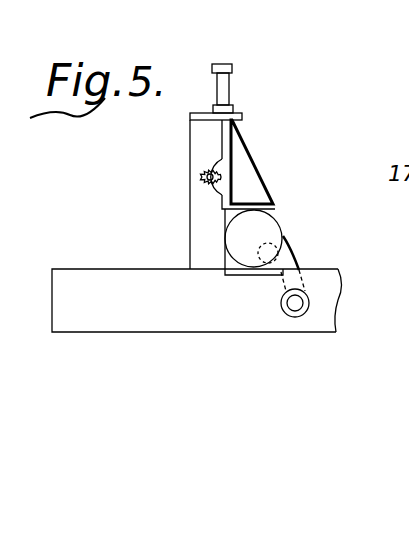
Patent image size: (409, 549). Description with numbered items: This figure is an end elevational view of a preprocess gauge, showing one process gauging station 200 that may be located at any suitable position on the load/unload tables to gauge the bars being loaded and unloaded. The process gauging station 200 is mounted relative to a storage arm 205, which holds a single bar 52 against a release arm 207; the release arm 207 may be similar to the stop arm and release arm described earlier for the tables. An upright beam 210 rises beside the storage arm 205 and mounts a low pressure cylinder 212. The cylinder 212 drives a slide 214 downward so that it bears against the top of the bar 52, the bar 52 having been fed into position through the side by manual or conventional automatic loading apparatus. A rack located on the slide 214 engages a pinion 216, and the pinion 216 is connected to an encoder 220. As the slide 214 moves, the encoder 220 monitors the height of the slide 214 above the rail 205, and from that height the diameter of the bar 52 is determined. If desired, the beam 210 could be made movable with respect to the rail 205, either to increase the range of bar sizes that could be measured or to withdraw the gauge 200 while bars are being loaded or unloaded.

The process gauging station 200 is at (252, 174).
The storage arm 205 is at (180, 318).
The release arm 207 is at (300, 253).
The bar 52 is at (263, 228).
The upright beam 210 is at (200, 140).
The low pressure cylinder 212 is at (227, 70).
The slide 214 is at (250, 192).
The pinion 216 is at (206, 189).
The encoder 220 is at (192, 180).